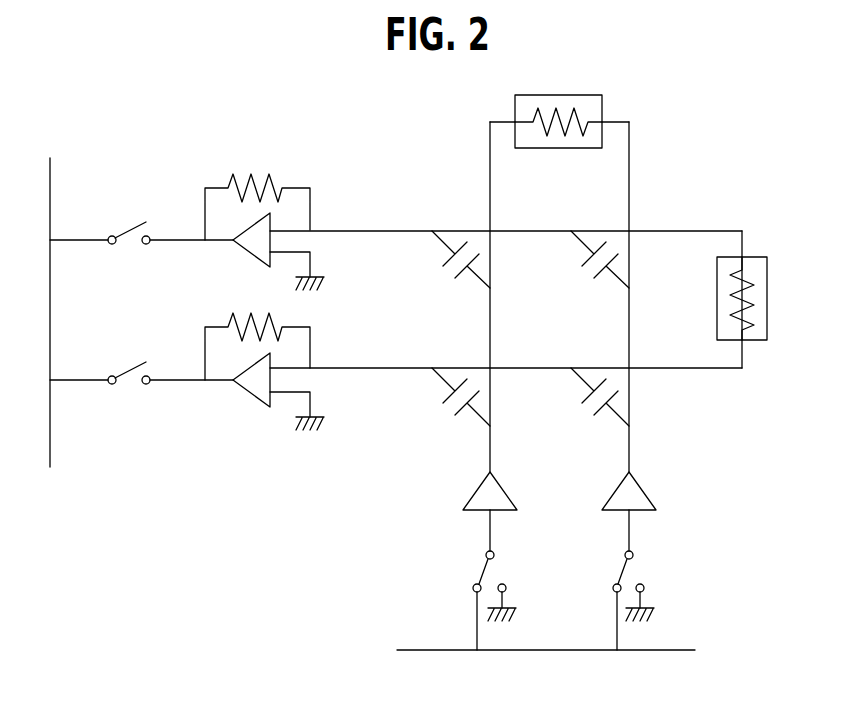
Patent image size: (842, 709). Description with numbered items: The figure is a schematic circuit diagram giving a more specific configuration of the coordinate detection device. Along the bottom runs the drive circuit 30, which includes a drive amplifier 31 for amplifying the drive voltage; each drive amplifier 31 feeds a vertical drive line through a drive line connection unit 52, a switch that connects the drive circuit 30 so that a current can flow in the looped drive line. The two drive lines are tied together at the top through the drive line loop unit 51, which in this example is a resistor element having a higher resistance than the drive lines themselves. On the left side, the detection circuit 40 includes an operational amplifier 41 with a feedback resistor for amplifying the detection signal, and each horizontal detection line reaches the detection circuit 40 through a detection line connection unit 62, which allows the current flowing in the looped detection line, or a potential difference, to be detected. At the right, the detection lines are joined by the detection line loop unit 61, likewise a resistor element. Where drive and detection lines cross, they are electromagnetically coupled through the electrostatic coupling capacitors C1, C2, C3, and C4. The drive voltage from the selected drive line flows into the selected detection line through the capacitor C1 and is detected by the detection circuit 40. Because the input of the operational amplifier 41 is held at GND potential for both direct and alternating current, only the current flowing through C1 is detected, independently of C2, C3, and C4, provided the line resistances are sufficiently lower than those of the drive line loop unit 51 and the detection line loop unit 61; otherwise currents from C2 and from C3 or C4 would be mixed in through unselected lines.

The drive circuit 30 is at (412, 648).
The drive amplifier 31 is at (646, 490).
The detection circuit 40 is at (50, 437).
The operational amplifier 41 is at (281, 173).
The drive line loop unit 51 is at (602, 97).
The drive line connection unit 52 is at (625, 571).
The detection line loop unit 61 is at (762, 341).
The detection line connection unit 62 is at (130, 232).
The electrostatic coupling capacitor C1 is at (461, 266).
The electrostatic coupling capacitor C2 is at (600, 266).
The electrostatic coupling capacitor C3 is at (461, 406).
The electrostatic coupling capacitor C4 is at (600, 406).